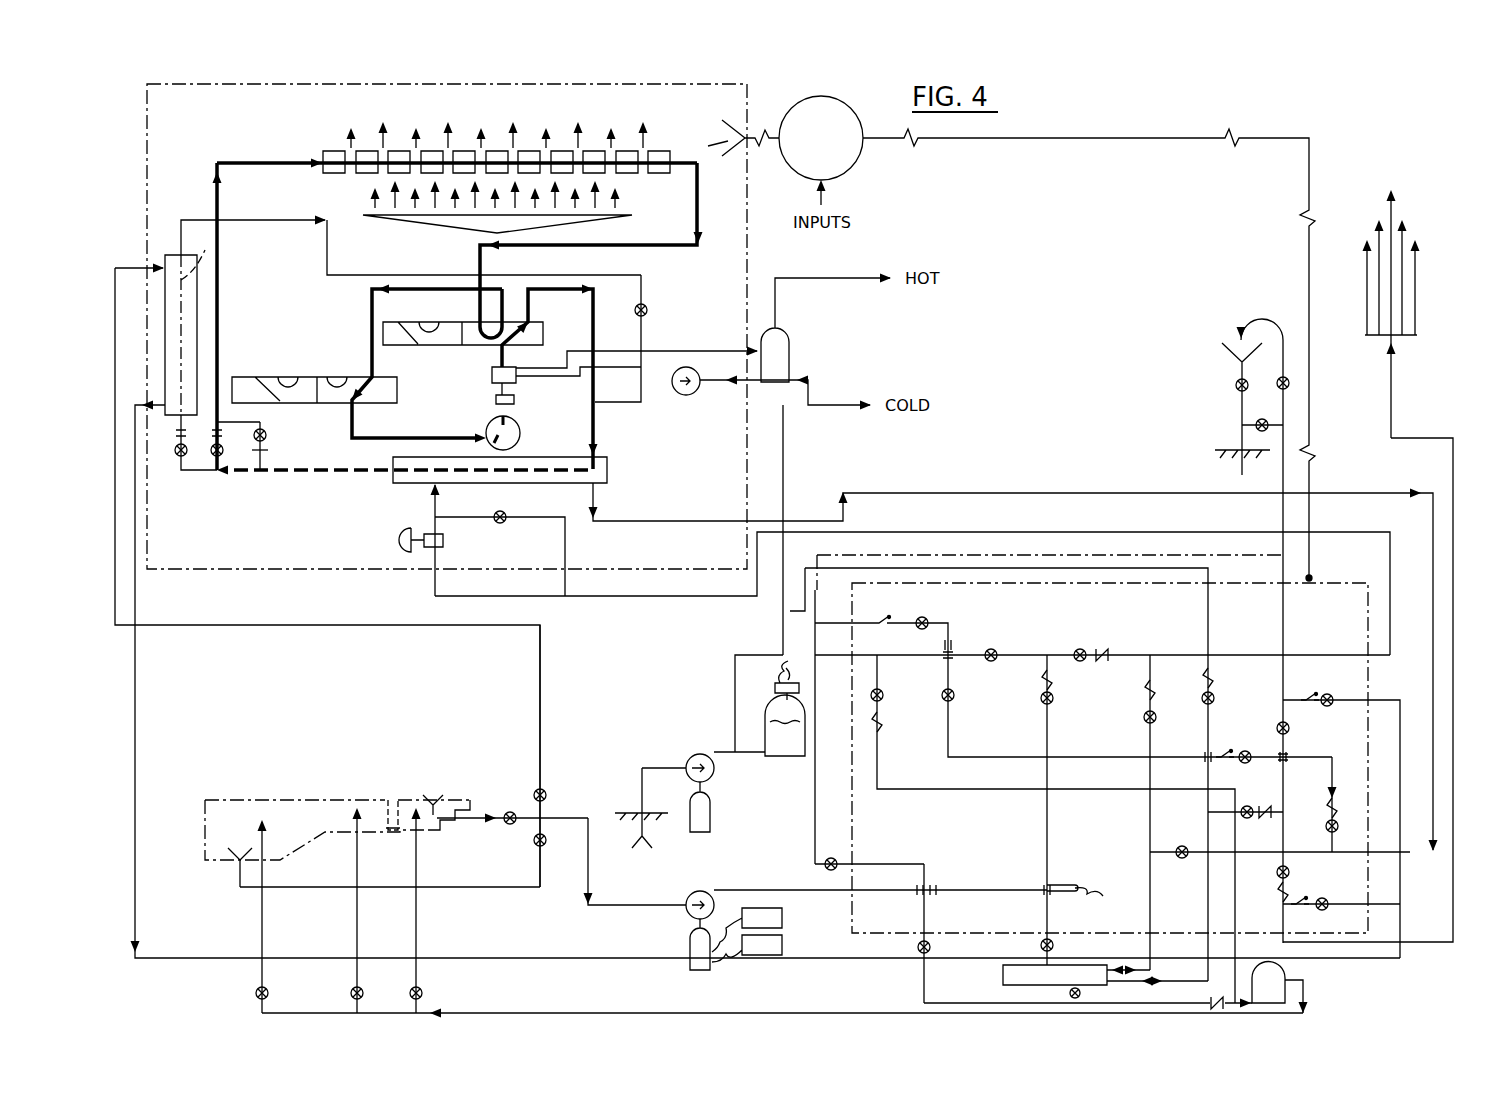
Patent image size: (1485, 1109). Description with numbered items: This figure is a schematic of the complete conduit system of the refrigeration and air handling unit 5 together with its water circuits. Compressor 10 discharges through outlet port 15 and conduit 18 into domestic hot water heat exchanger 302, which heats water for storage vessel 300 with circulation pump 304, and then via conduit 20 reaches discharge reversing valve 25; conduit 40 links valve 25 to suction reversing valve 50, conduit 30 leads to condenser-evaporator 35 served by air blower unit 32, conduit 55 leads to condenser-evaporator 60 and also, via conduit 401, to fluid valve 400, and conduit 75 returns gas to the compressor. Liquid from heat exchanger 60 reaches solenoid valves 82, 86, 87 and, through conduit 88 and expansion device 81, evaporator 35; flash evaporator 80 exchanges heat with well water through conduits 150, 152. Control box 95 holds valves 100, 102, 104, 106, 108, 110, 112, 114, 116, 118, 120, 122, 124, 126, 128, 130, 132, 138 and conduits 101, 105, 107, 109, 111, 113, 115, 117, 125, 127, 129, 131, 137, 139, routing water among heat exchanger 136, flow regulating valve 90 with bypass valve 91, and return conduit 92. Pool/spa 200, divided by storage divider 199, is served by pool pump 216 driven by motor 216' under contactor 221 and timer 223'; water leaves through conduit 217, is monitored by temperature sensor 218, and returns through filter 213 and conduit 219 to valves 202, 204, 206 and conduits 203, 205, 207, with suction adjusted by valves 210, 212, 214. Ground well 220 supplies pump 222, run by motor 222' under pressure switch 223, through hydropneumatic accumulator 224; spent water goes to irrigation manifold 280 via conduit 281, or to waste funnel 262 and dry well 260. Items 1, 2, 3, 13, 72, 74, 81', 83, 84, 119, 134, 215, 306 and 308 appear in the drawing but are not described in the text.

The valve 1 is at (1234, 386).
The valve 2 is at (1264, 417).
The valve 3 is at (1276, 384).
The refrigeration and air handling unit 5 is at (747, 90).
The compressor 10 is at (519, 428).
The valve 13 is at (833, 858).
The outlet port 15 is at (516, 400).
The conduit 18 is at (492, 377).
The conduit 20 is at (516, 367).
The compressor discharge reversing valve 25 is at (462, 345).
The conduit 30 is at (701, 188).
The air blower unit 32 is at (573, 224).
The condenser-evaporator heat exchanger 35 is at (660, 140).
The conduit 40 is at (370, 302).
The compressor suction reversing valve 50 is at (397, 381).
The conduit 55 is at (594, 372).
The condenser-evaporator 60 is at (608, 467).
The bypass line 72 is at (275, 220).
The damper 74 is at (210, 252).
The conduit 75 is at (400, 428).
The flash evaporator 80 is at (174, 257).
The refrigerant fluid expansion device 81 is at (227, 445).
The flange 81' is at (183, 442).
The first refrigerant solenoid valve 82 is at (177, 463).
The valve 83 is at (268, 432).
The riser line 84 is at (212, 194).
The second refrigerant solenoid valve 86 is at (216, 460).
The third refrigerant solenoid valve 87 is at (270, 451).
The conduit 88 is at (276, 160).
The flow regulating valve 90 is at (443, 540).
The bypass valve 91 is at (505, 511).
The conduit 92 is at (601, 500).
The control box 95 is at (1335, 582).
The valve 100 is at (922, 618).
The conduit 101 is at (954, 638).
The water valve 102 is at (993, 644).
The water valve 104 is at (1083, 644).
The conduit 105 is at (661, 596).
The valve 106 is at (888, 695).
The conduit 107 is at (878, 747).
The valve 108 is at (958, 695).
The conduit 109 is at (951, 728).
The water valve 110 is at (1054, 698).
The conduit 111 is at (1048, 731).
The valve 112 is at (1144, 717).
The conduit 113 is at (1147, 687).
The valve 114 is at (1214, 698).
The conduit 115 is at (543, 694).
The valve 116 is at (1321, 694).
The conduit 117 is at (1366, 696).
The valve 118 is at (1290, 730).
The flange 119 is at (1290, 753).
The valve 120 is at (1246, 750).
The valve 122 is at (1328, 829).
The valve 124 is at (1270, 795).
The conduit 125 is at (1226, 816).
The valve 126 is at (1288, 872).
The conduit 127 is at (1292, 604).
The valve 128 is at (1319, 908).
The conduit 129 is at (1356, 904).
The valve 130 is at (1188, 846).
The conduit 131 is at (1150, 872).
The valve 132 is at (1053, 946).
The valve 134 is at (930, 948).
The heat exchanger 136 is at (1002, 977).
The conduit 137 is at (1194, 982).
The manual valve 138 is at (1094, 996).
The conduit 139 is at (1160, 1004).
The conduit 150 is at (134, 266).
The conduit 152 is at (147, 672).
The storage divider 199 is at (392, 796).
The swimming pool/spa 200 is at (262, 786).
The valve 202 is at (270, 994).
The conduit 203 is at (268, 932).
The valve 204 is at (363, 994).
The conduit 205 is at (360, 932).
The valve 206 is at (422, 994).
The conduit 207 is at (420, 932).
The valve 210 is at (506, 822).
The valve 212 is at (536, 844).
The pool filter 213 is at (1286, 962).
The valve 214 is at (543, 787).
The line 215 is at (612, 904).
The pool pump 216 is at (704, 897).
The pool pump motor 216' is at (673, 944).
The conduit 217 is at (999, 886).
The temperature sensor 218 is at (1052, 880).
The conduit 219 is at (582, 1008).
The ground well 220 is at (638, 786).
The contactor 221 is at (782, 918).
The ground well pump 222 is at (678, 759).
The motor 222' is at (726, 807).
The pressure switch 223 is at (741, 703).
The timer 223' is at (769, 945).
The hydropneumatic accumulator 224 is at (783, 758).
The dry well 260 is at (1232, 446).
The waste funnel 262 is at (1230, 338).
The irrigation manifold 280 is at (1425, 320).
The conduit 281 is at (1440, 448).
The domestic hot water storage vessel 300 is at (790, 346).
The domestic water heat recovery unit 302 is at (522, 378).
The domestic hot water circulation pump 304 is at (676, 390).
The line 306 is at (694, 353).
The line 308 is at (741, 384).
The fluid valve 400 is at (646, 304).
The conduit 401 is at (644, 339).